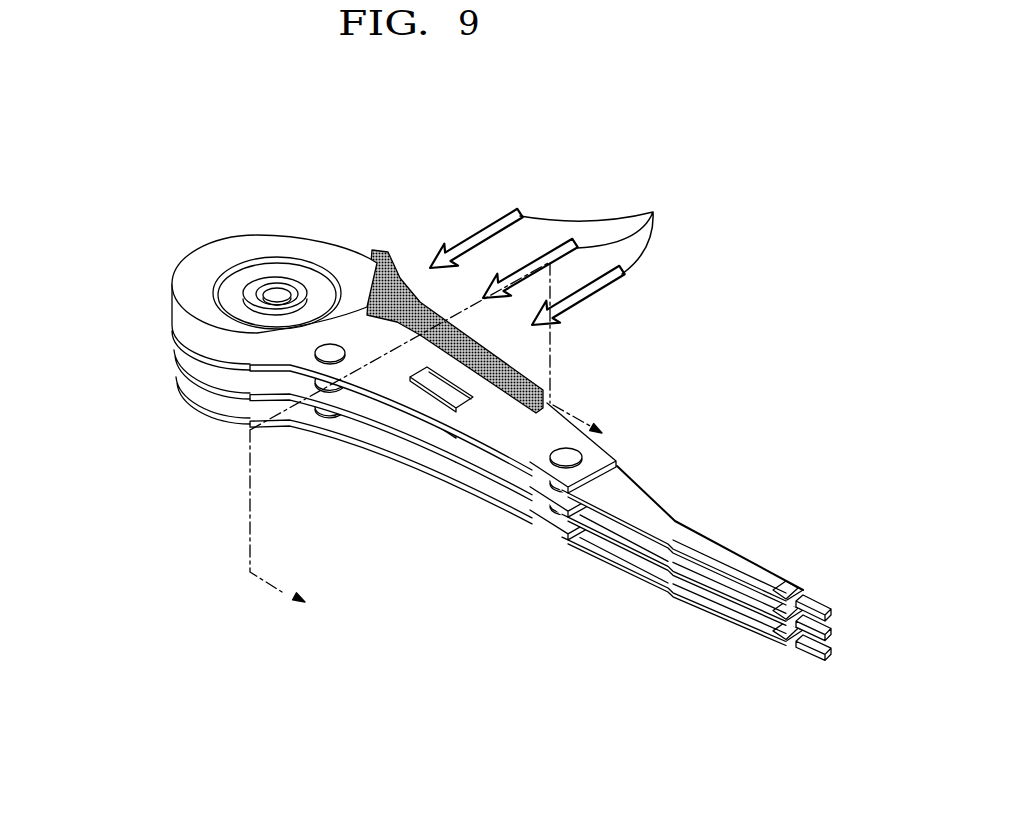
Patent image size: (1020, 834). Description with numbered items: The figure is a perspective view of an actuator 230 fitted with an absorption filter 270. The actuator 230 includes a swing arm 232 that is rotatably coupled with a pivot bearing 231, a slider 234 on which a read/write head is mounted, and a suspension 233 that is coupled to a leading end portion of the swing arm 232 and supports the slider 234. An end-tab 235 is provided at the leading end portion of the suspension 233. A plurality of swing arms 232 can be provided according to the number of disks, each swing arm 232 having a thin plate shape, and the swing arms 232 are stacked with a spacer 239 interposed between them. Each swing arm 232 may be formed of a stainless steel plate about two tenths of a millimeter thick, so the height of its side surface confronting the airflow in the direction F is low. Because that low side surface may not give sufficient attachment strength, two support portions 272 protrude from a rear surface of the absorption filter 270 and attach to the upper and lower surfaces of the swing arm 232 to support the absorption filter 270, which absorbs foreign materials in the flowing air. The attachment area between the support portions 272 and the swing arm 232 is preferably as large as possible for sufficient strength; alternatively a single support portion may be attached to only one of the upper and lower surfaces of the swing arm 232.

The actuator 230 is at (490, 431).
The pivot bearing 231 is at (281, 292).
The swing arm 232 is at (397, 444).
The suspension 233 is at (657, 510).
The slider 234 is at (785, 590).
The end-tab 235 is at (827, 610).
The spacer 239 is at (180, 374).
The absorption filter 270 is at (542, 388).
The support portions 272 is at (381, 254).